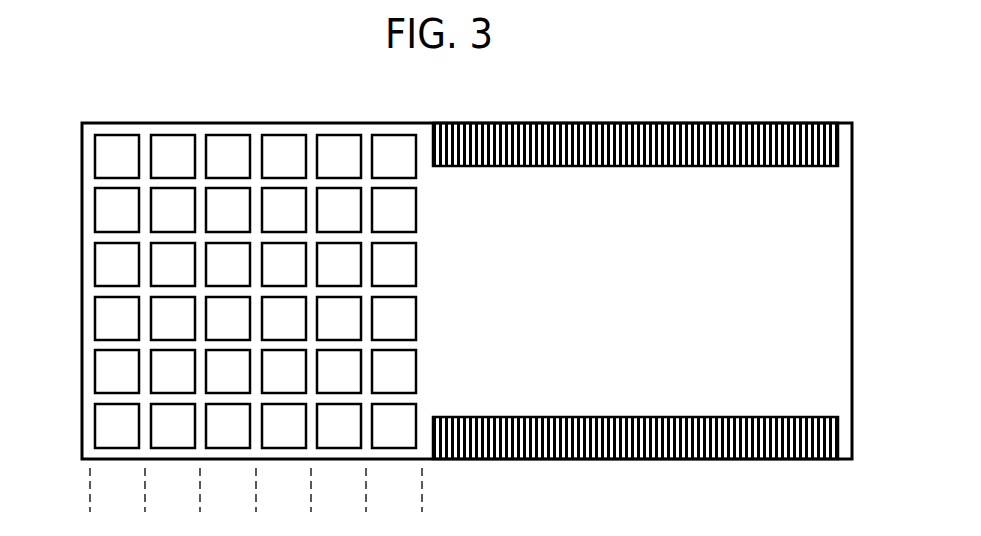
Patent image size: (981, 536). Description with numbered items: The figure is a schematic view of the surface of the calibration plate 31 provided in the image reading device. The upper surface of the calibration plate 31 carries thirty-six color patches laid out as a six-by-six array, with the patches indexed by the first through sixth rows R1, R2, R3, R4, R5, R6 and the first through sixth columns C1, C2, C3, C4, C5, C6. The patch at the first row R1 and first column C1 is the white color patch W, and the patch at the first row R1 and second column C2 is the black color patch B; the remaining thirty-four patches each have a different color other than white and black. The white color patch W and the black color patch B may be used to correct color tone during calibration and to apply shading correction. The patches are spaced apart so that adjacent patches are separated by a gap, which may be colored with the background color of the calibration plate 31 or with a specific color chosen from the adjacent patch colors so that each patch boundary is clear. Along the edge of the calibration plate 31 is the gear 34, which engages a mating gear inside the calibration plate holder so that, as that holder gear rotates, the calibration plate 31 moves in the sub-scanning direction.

The calibration plate 31 is at (439, 261).
The gear 34 is at (725, 122).
The white color patch W is at (117, 156).
The black color patch B is at (117, 210).
The first column C1 is at (221, 153).
The second column C2 is at (221, 207).
The third column C3 is at (27, 237).
The fourth column C4 is at (27, 291).
The fifth column C5 is at (27, 345).
The sixth column C6 is at (27, 391).
The first row R1 is at (109, 490).
The second row R2 is at (164, 490).
The third row R3 is at (219, 490).
The fourth row R4 is at (275, 490).
The fifth row R5 is at (330, 490).
The sixth row R6 is at (394, 490).